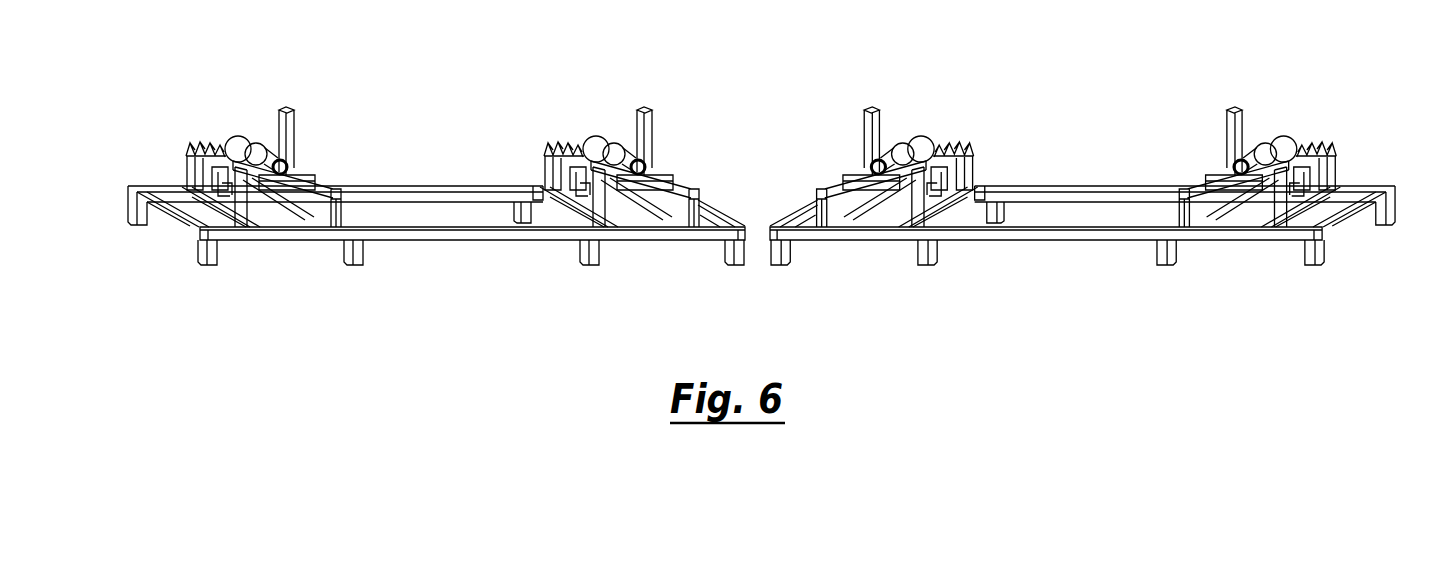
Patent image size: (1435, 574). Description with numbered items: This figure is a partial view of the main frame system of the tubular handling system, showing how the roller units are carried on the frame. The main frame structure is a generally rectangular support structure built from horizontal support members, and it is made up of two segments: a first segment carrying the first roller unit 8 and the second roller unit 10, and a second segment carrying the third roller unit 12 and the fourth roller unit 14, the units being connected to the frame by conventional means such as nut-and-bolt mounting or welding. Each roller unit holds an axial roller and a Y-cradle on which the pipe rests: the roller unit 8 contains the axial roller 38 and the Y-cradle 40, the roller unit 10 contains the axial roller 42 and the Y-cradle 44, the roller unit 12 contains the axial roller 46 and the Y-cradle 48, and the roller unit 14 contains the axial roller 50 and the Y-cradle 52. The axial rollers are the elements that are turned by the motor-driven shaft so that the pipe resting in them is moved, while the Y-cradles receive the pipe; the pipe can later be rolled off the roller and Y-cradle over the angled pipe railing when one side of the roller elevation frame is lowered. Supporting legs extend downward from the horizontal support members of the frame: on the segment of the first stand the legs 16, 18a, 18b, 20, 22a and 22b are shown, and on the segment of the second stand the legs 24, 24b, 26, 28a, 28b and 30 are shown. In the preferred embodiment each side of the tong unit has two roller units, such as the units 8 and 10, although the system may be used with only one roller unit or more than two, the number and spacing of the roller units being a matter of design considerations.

The first roller unit 8 is at (895, 173).
The second roller unit 10 is at (1253, 177).
The third roller unit 12 is at (272, 180).
The fourth roller unit 14 is at (622, 179).
The supporting leg 16 is at (787, 257).
The supporting leg 18a is at (923, 257).
The supporting leg 18b is at (1007, 210).
The supporting leg 20 is at (1177, 253).
The supporting leg 22a is at (1320, 255).
The supporting leg 22b is at (1393, 207).
The supporting leg 24 is at (203, 257).
The supporting leg 24b is at (128, 213).
The supporting leg 26 is at (360, 258).
The supporting leg 28a is at (583, 257).
The supporting leg 28b is at (515, 210).
The supporting leg 30 is at (725, 255).
The axial roller 38 is at (907, 138).
The Y-cradle 40 is at (940, 140).
The axial roller 42 is at (1272, 137).
The Y-cradle 44 is at (1307, 137).
The axial roller 46 is at (253, 137).
The Y-cradle 48 is at (222, 142).
The axial roller 50 is at (607, 143).
The Y-cradle 52 is at (580, 143).